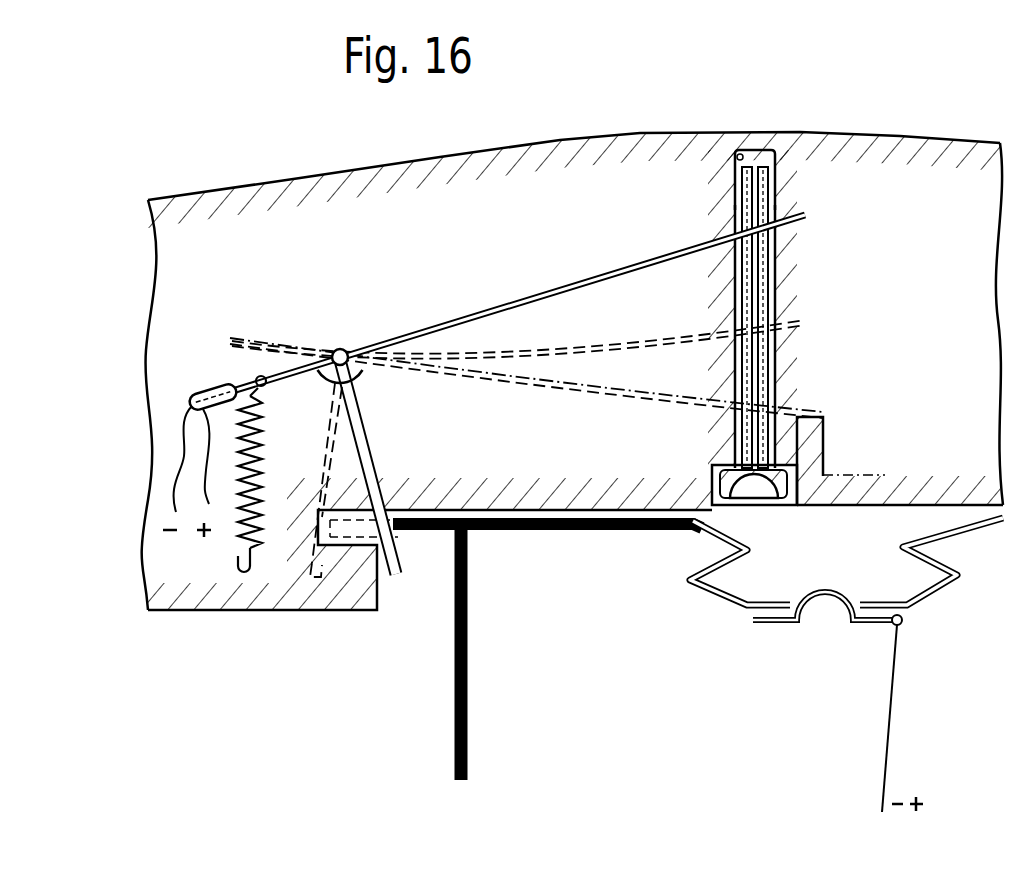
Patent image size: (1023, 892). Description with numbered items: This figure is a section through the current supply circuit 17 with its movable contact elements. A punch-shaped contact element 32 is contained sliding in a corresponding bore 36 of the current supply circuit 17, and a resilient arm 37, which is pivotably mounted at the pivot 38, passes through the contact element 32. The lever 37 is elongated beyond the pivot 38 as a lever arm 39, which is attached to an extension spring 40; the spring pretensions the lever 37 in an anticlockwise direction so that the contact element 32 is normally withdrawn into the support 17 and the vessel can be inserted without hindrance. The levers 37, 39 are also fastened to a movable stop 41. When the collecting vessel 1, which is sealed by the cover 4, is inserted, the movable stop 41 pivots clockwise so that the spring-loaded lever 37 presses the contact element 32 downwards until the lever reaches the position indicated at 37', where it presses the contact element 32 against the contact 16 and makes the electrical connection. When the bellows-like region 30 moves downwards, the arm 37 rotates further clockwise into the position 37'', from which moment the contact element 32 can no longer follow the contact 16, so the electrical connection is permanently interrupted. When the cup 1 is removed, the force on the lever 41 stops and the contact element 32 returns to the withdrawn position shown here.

The current supply circuit 17 is at (290, 178).
The bore 36 is at (738, 155).
The contact element 32 is at (768, 190).
The resilient arm 37 is at (496, 313).
The lever position 37' is at (518, 330).
The lever position 37'' is at (526, 392).
The pivot 38 is at (340, 348).
The lever arm 39 is at (262, 372).
The extension spring 40 is at (262, 525).
The movable stop 41 is at (378, 448).
The cover 4 is at (443, 537).
The collecting vessel 1 is at (460, 733).
The contact 16 is at (780, 623).
The bellows-like region 30 is at (933, 588).